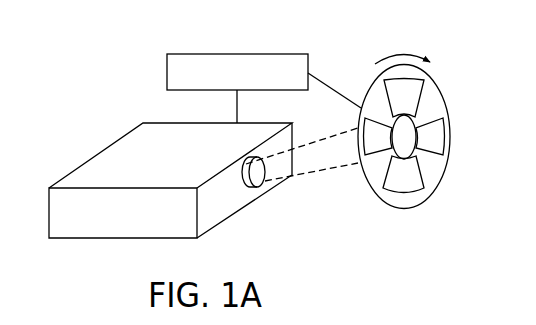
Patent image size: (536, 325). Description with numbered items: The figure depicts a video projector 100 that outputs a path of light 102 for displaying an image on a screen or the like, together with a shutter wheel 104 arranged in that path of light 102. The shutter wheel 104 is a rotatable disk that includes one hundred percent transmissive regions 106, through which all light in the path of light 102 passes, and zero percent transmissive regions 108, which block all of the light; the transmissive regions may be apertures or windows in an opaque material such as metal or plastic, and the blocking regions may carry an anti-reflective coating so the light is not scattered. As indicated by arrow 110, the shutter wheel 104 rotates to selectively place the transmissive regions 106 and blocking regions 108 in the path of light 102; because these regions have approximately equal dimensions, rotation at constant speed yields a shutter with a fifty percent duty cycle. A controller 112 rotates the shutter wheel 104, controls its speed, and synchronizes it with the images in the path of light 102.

The projector 100 is at (97, 140).
The path of light 102 is at (308, 161).
The shutter wheel 104 is at (440, 91).
The 100% transmissive regions 106 is at (417, 187).
The 0% transmissive regions 108 is at (432, 172).
The arrow 110 is at (402, 44).
The controller 112 is at (267, 54).